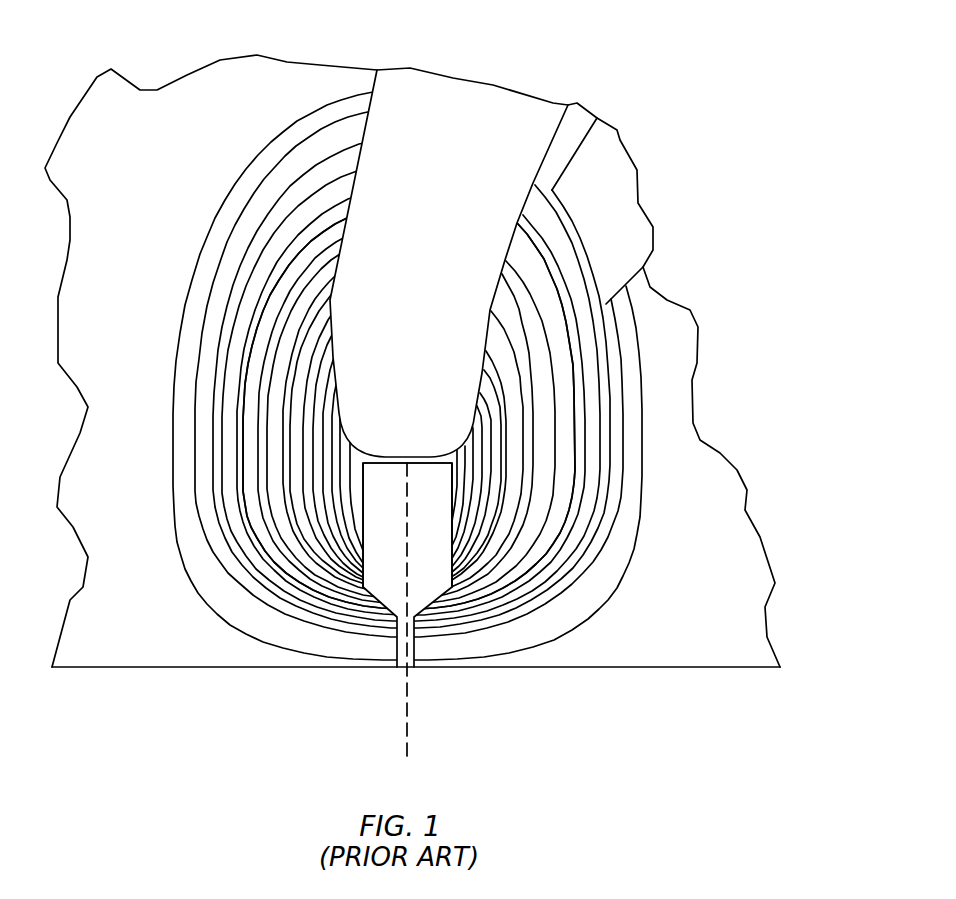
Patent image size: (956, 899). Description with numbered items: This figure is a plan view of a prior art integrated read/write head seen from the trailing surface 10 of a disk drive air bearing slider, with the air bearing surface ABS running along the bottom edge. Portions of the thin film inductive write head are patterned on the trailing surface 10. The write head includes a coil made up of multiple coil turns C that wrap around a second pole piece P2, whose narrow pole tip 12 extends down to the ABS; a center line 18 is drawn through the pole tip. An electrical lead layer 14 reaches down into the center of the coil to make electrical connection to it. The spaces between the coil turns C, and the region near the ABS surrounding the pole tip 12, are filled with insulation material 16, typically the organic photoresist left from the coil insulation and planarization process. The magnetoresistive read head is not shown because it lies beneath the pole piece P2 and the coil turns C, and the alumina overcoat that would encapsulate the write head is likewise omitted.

The trailing surface 10 is at (687, 637).
The pole tip 12 is at (400, 645).
The electrical lead layer 14 is at (427, 133).
The insulation material 16 is at (557, 425).
The center line of pole tip 18 is at (413, 722).
The coil turns C is at (562, 467).
The second pole piece P2 is at (393, 583).
The air bearing surface ABS is at (597, 668).